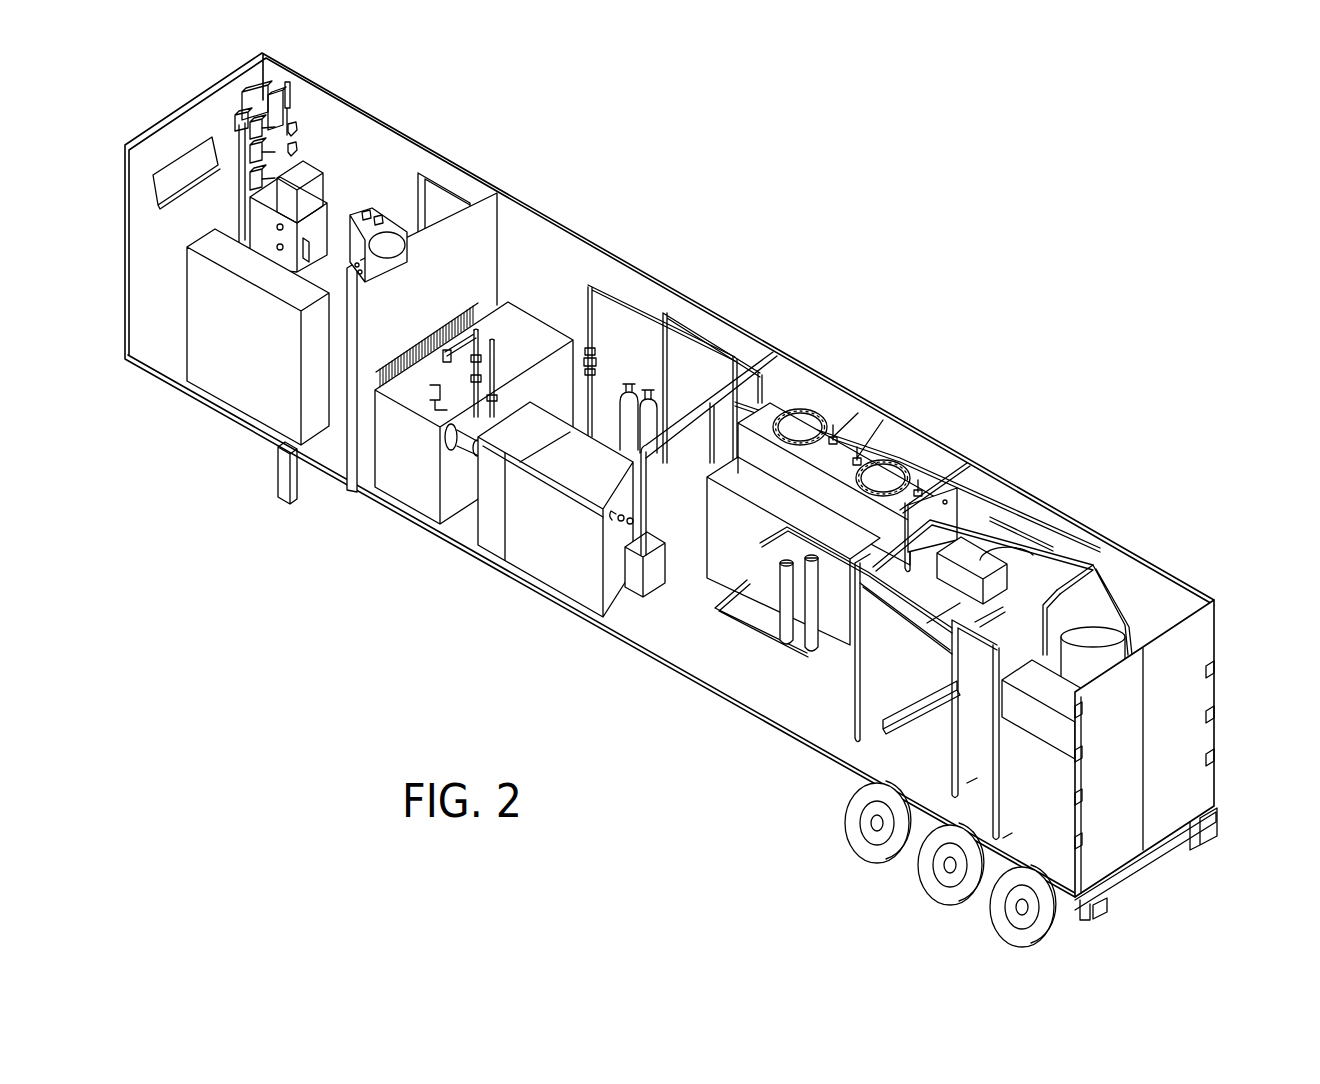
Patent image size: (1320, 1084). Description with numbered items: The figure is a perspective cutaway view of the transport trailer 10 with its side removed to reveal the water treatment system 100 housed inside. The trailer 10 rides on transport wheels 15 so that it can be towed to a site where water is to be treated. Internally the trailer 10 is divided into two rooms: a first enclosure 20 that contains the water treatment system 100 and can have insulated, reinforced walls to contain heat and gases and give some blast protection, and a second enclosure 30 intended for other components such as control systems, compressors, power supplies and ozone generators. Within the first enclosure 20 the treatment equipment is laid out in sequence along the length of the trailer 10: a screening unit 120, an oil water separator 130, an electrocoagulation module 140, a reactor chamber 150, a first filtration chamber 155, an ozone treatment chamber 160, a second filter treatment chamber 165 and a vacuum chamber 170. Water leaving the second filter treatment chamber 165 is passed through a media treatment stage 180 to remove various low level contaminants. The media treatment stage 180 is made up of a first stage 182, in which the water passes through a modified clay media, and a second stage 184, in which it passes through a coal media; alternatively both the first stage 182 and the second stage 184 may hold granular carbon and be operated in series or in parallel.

The transport trailer 10 is at (742, 340).
The transport wheels 15 is at (933, 883).
The first enclosure 20 is at (570, 262).
The second enclosure 30 is at (345, 138).
The water treatment system 100 is at (531, 243).
The screening unit 120 is at (707, 480).
The oil water separator 130 is at (537, 532).
The electrocoagulation module 140 is at (407, 455).
The reactor chamber 150 is at (808, 423).
The first filtration chamber 155 is at (735, 535).
The ozone treatment chamber 160 is at (884, 493).
The second filter treatment chamber 165 is at (842, 653).
The vacuum chamber 170 is at (1017, 562).
The media treatment stage 180 is at (1120, 583).
The first stage 182 is at (1100, 633).
The second stage 184 is at (1140, 645).